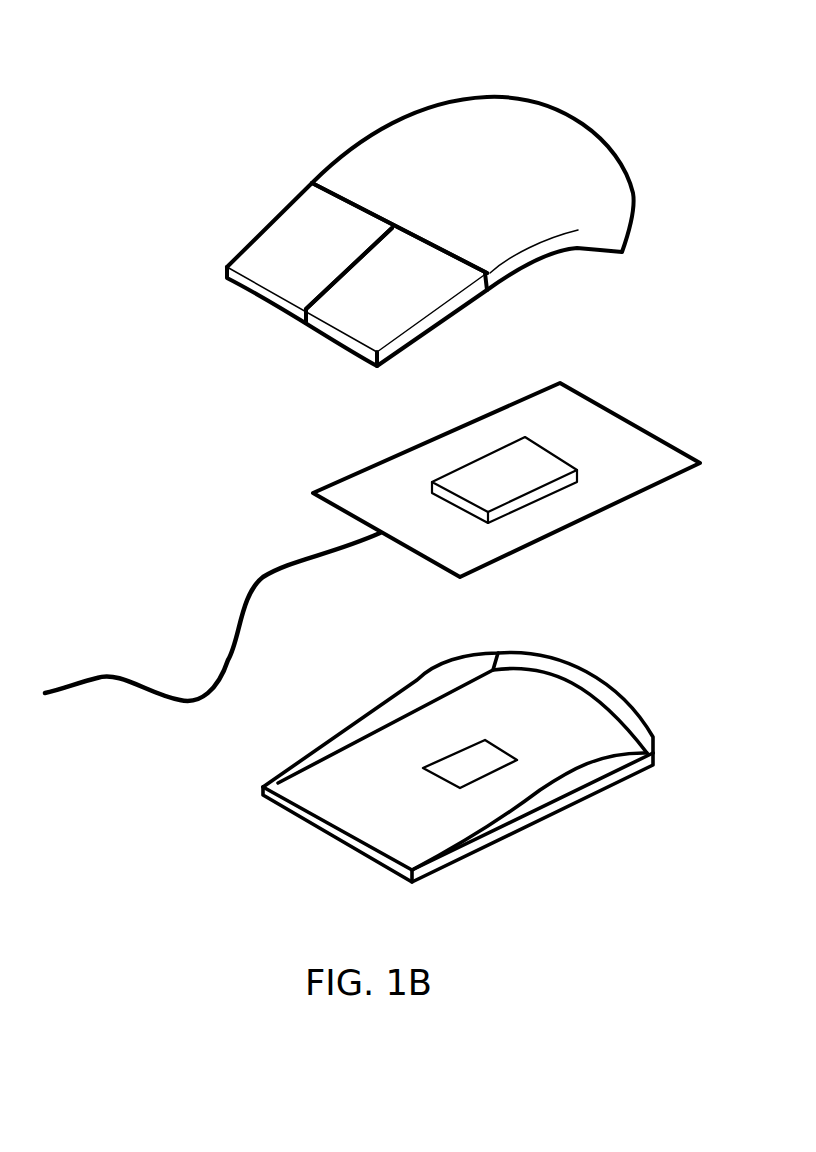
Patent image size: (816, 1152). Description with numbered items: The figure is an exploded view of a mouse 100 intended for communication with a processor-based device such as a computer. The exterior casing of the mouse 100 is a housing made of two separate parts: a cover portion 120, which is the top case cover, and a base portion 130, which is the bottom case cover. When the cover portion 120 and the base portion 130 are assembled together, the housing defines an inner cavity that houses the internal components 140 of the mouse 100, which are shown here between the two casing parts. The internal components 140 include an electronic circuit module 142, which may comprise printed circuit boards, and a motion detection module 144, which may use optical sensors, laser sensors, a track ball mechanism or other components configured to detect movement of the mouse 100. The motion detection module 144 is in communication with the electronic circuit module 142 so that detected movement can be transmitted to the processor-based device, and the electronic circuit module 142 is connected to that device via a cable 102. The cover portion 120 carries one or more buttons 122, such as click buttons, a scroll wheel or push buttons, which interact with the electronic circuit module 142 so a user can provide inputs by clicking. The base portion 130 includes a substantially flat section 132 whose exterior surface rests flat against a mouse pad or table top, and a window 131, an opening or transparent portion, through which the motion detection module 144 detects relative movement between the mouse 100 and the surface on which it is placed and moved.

The mouse 100 is at (627, 68).
The cable 102 is at (110, 683).
The cover portion 120 is at (415, 163).
The buttons 122 is at (312, 228).
The base portion 130 is at (458, 771).
The window 131 is at (467, 763).
The substantially flat section 132 is at (550, 710).
The internal components 140 is at (437, 457).
The electronic circuit module 142 is at (605, 428).
The motion detection module 144 is at (495, 477).